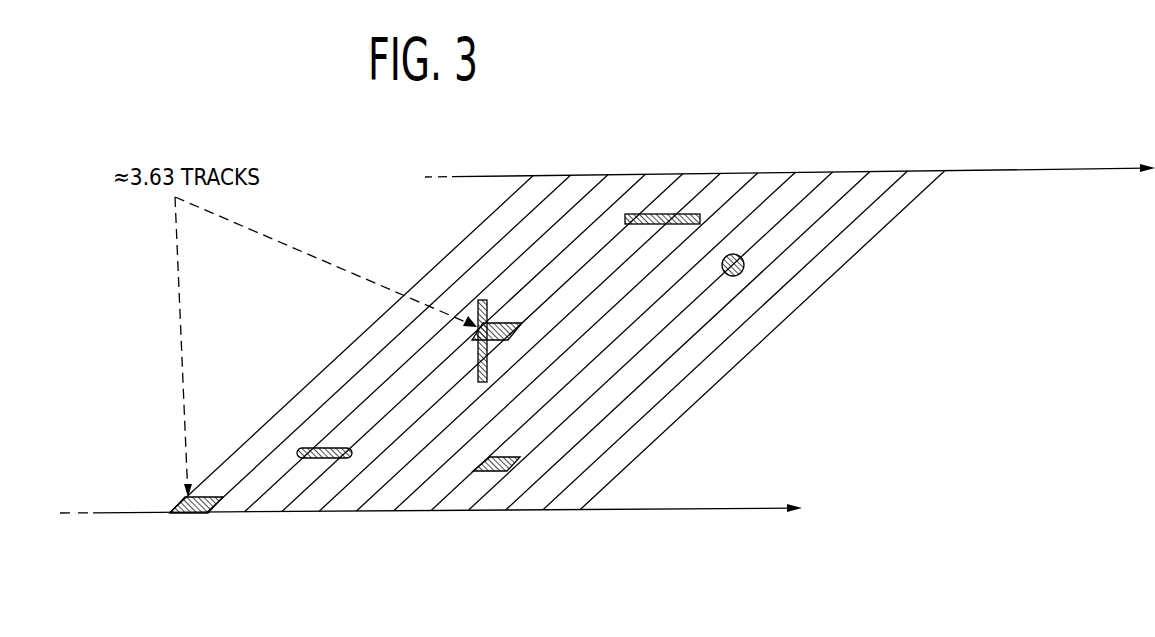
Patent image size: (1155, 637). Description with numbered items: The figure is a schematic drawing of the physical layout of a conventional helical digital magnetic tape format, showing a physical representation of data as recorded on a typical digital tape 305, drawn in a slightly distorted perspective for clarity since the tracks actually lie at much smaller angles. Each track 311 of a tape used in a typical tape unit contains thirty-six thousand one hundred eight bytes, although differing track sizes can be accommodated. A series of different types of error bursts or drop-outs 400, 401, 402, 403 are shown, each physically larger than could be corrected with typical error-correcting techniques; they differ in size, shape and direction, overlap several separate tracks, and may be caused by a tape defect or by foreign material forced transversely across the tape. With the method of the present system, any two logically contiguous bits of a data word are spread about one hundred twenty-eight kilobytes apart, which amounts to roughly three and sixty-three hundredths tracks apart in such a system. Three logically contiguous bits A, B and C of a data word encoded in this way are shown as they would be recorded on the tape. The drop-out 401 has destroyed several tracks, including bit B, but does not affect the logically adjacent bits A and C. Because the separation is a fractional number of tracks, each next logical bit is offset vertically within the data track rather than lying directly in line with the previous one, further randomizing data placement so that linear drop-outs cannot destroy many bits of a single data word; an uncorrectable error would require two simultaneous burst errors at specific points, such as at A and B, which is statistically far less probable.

The digital tape 305 is at (558, 520).
The track 311 is at (557, 177).
The drop-out 400 is at (677, 214).
The drop-out 401 is at (478, 303).
The drop-out 402 is at (740, 257).
The drop-out 403 is at (313, 458).
The logically contiguous bit A is at (183, 514).
The logically contiguous bit B is at (490, 323).
The logically contiguous bit C is at (519, 462).